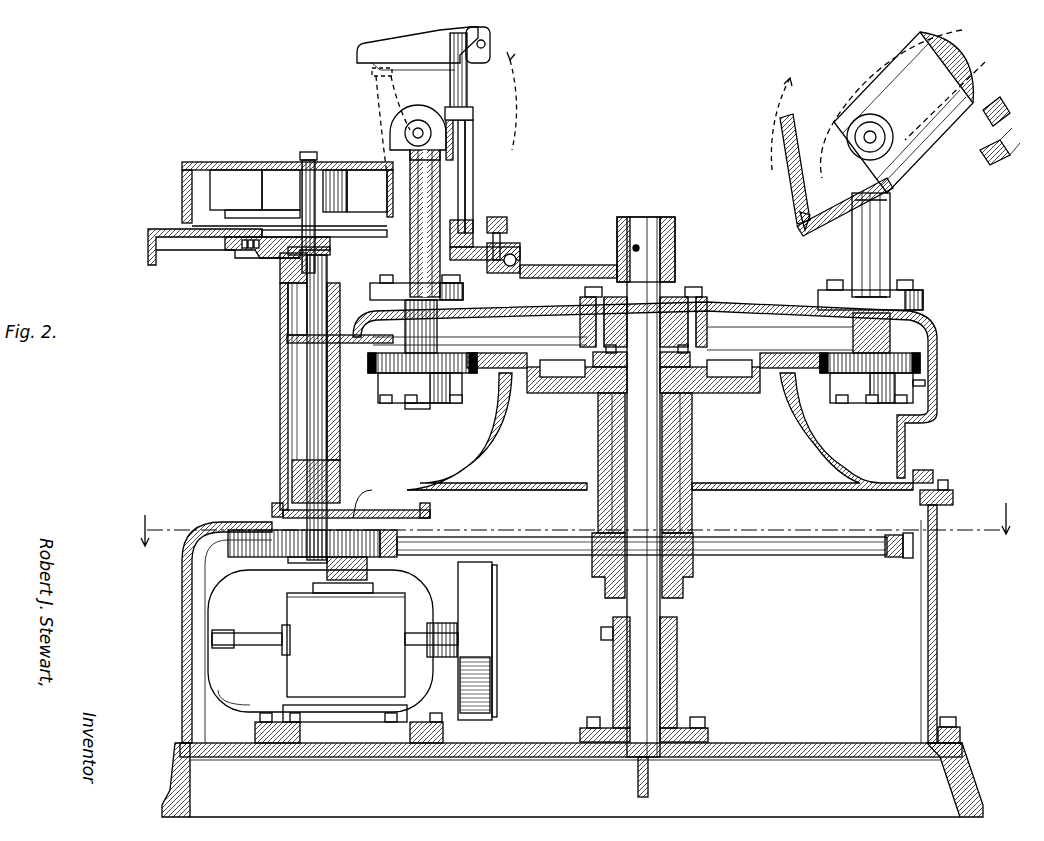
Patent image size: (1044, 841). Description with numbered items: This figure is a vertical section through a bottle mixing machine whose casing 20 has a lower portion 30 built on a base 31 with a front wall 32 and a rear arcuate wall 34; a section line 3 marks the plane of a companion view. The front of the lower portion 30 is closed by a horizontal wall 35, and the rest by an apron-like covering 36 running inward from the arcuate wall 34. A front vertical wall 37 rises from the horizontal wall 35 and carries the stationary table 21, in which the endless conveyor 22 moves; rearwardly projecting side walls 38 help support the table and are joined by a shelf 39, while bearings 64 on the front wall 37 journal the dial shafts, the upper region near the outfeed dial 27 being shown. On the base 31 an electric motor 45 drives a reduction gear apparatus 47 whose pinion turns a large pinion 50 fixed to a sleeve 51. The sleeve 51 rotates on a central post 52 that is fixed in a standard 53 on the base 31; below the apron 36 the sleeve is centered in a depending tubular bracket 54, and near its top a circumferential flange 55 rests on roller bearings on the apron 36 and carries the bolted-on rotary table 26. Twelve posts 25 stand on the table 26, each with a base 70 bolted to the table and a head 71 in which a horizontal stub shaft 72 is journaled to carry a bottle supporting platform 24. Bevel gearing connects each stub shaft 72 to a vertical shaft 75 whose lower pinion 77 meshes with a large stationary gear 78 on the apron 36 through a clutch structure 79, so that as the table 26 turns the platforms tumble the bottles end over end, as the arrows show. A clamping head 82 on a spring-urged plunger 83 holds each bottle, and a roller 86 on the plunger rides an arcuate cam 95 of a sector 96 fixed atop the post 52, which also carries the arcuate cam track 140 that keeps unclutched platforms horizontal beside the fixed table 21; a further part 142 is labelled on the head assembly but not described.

The section line 3- 3 is at (577, 513).
The casing 20 is at (938, 625).
The stationary table 21 is at (148, 233).
The endless conveyor 22 is at (232, 248).
The bottle supporting platform 24 is at (472, 152).
The post 25 is at (432, 208).
The rotary table 26 is at (770, 305).
The outfeed dial 27 is at (240, 162).
The lower portion of casing 30 is at (922, 582).
The base 31 is at (760, 745).
The front wall 32 is at (182, 586).
The arcuate wall 34 is at (938, 668).
The horizontal wall 35 is at (300, 500).
The apron-like covering 36 is at (832, 468).
The front vertical wall 37 is at (280, 300).
The side walls 38 is at (335, 424).
The shelf 39 is at (325, 346).
The electric motor 45 is at (320, 641).
The reduction gear apparatus 47 is at (376, 650).
The large pinion 50 is at (900, 557).
The sleeve 51 is at (690, 470).
The post 52 is at (640, 438).
The standard 53 is at (680, 682).
The depending tubular bracket 54 is at (695, 487).
The circumferential flange 55 is at (705, 295).
The bearings 64 is at (300, 310).
The base of post 70 is at (380, 296).
The head 71 is at (412, 112).
The horizontal stub shaft 72 is at (405, 133).
The vertical shaft 75 is at (878, 263).
The pinion 77 is at (375, 372).
The large stationary gear 78 is at (494, 368).
The clutch structure 79 is at (443, 403).
The clamping head 82 is at (426, 56).
The plunger 83 is at (467, 82).
The roller 86 is at (473, 232).
The arcuate cam 95 is at (488, 243).
The sector 96 is at (590, 232).
The arcuate cam track 140 is at (528, 247).
The bolt 142 is at (512, 240).